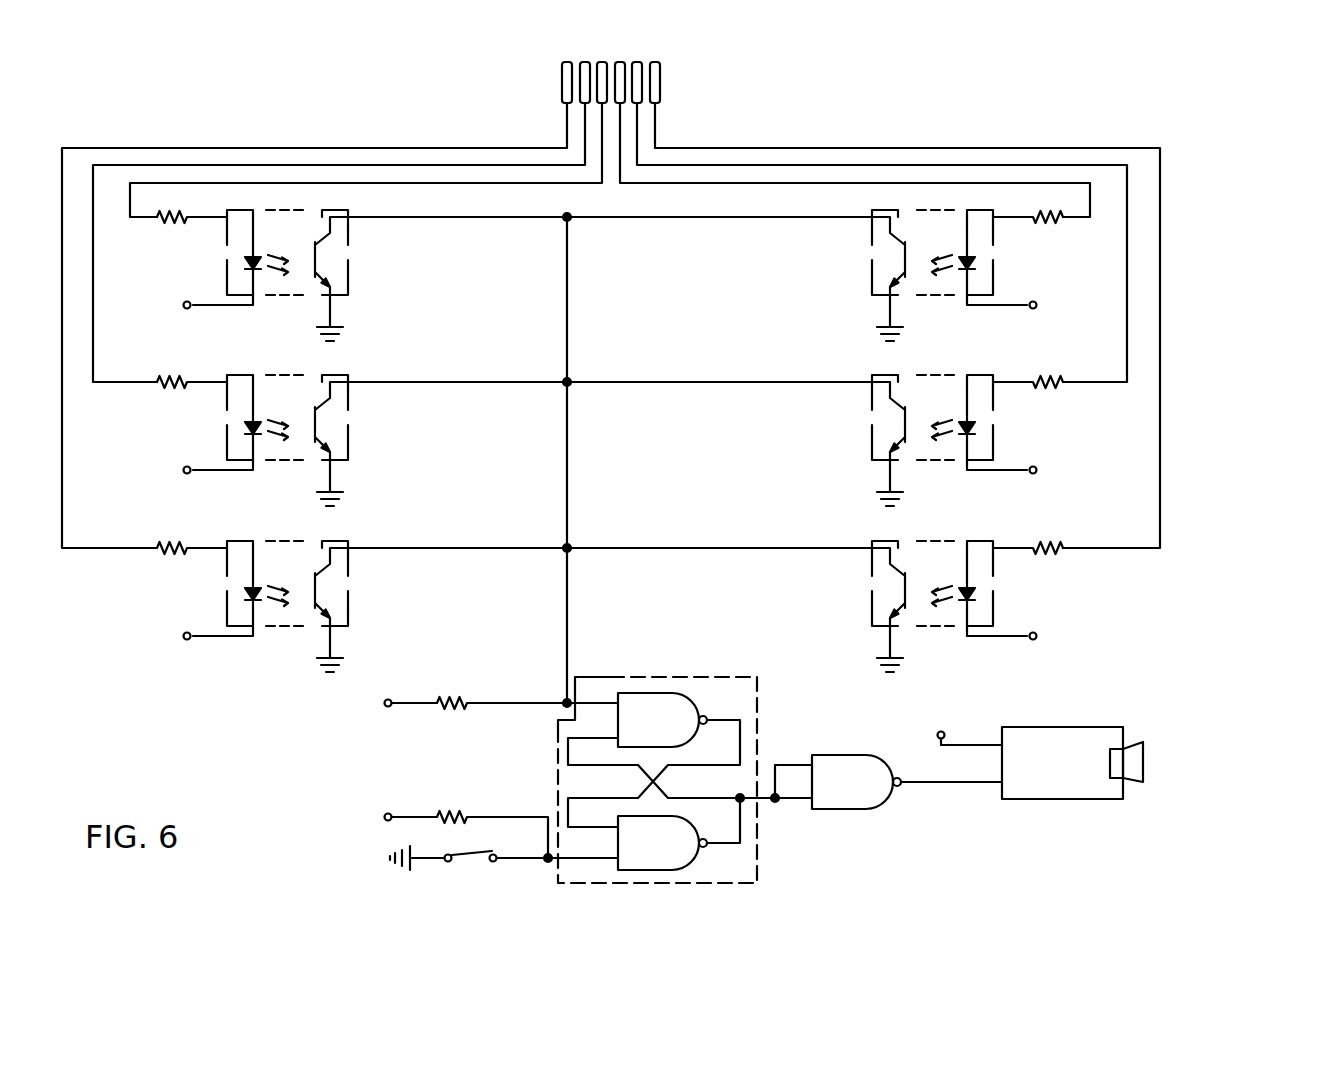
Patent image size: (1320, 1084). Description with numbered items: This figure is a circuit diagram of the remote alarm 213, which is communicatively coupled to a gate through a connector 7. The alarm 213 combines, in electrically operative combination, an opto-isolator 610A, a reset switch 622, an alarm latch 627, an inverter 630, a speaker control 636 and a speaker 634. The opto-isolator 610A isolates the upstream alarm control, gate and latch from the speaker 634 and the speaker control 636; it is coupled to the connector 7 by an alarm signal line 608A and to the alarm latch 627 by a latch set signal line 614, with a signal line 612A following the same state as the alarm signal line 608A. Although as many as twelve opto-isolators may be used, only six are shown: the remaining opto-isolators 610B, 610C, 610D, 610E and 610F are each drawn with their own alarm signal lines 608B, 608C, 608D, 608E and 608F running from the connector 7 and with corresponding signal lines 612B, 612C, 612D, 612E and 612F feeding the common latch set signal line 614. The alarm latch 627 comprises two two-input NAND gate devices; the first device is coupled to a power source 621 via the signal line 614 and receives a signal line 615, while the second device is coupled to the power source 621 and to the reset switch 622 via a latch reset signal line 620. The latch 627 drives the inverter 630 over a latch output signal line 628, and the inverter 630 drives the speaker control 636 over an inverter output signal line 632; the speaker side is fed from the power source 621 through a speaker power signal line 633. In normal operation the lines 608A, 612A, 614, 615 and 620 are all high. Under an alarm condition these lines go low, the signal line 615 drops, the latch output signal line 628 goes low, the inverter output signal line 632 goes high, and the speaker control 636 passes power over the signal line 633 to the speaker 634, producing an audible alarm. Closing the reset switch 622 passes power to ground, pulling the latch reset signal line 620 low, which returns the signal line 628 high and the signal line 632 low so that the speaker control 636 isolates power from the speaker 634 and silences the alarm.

The connector 7 is at (658, 76).
The alarm 213 is at (1232, 272).
The alarm signal line 608A is at (768, 147).
The conductor line 608B is at (838, 164).
The conductor line 608C is at (912, 182).
The conductor line 608D is at (405, 182).
The conductor line 608E is at (331, 164).
The conductor line 608F is at (271, 147).
The opto-isolator 610A is at (938, 634).
The opto isolator 610B is at (938, 468).
The opto isolator 610C is at (938, 303).
The opto isolator 610D is at (282, 303).
The opto isolator 610E is at (282, 468).
The opto isolator 610F is at (282, 634).
The signal line 612A is at (657, 559).
The output line 612B is at (657, 393).
The output line 612C is at (657, 228).
The output line 612D is at (553, 228).
The output line 612E is at (553, 393).
The output line 612F is at (553, 559).
The latch set signal line 614 is at (562, 666).
The signal line 615 is at (589, 702).
The latch reset signal line 620 is at (590, 862).
The power source 621 is at (369, 803).
The reset switch 622 is at (463, 873).
The alarm latch 627 is at (742, 882).
The latch output signal line 628 is at (766, 805).
The inverter 630 is at (841, 810).
The inverter output signal line 632 is at (972, 787).
The speaker power signal line 633 is at (981, 744).
The speaker 634 is at (1140, 762).
The speaker control 636 is at (1062, 800).